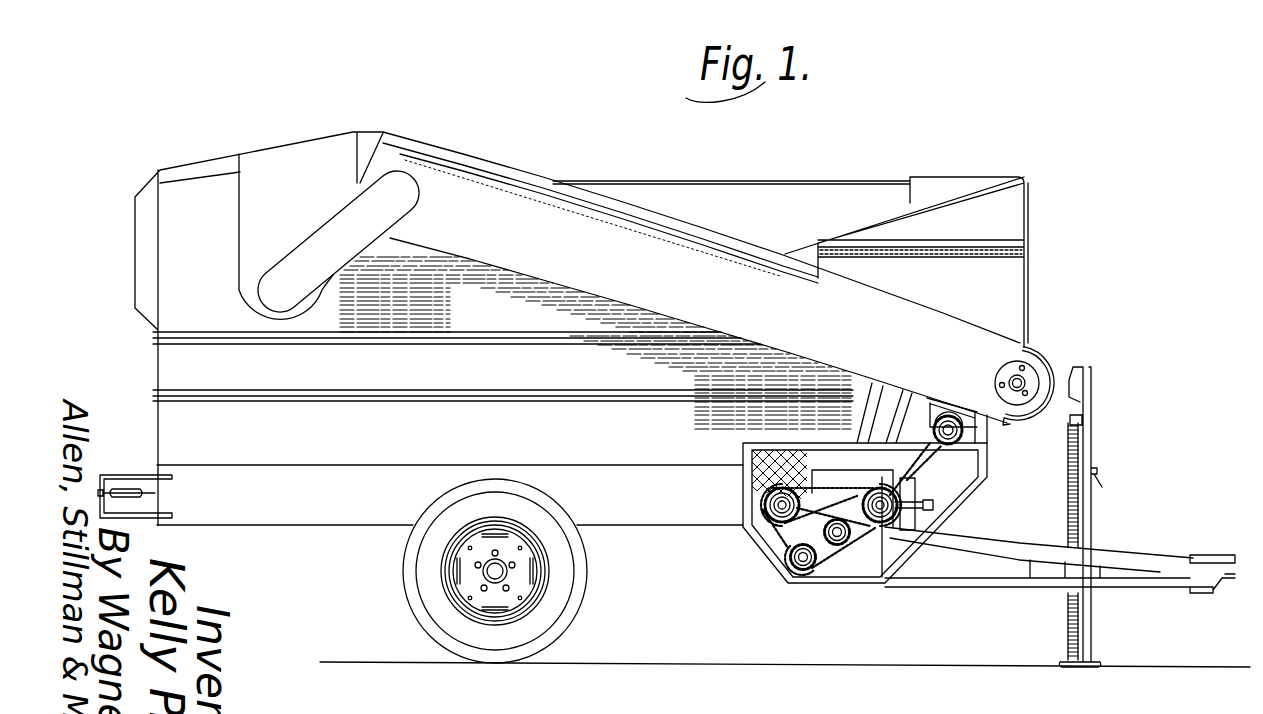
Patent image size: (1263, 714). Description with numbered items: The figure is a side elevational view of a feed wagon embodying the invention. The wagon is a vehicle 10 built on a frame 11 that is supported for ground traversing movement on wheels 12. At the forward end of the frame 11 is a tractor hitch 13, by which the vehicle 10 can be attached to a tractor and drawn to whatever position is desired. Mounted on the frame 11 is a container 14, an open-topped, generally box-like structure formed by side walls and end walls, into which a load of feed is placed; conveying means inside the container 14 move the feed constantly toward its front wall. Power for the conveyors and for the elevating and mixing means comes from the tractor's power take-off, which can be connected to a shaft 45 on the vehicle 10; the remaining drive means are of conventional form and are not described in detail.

The vehicle 10 is at (1062, 240).
The frame 11 is at (310, 515).
The wheels 12 is at (583, 583).
The tractor hitch 13 is at (1147, 563).
The container 14 is at (815, 167).
The shaft 45 is at (933, 503).